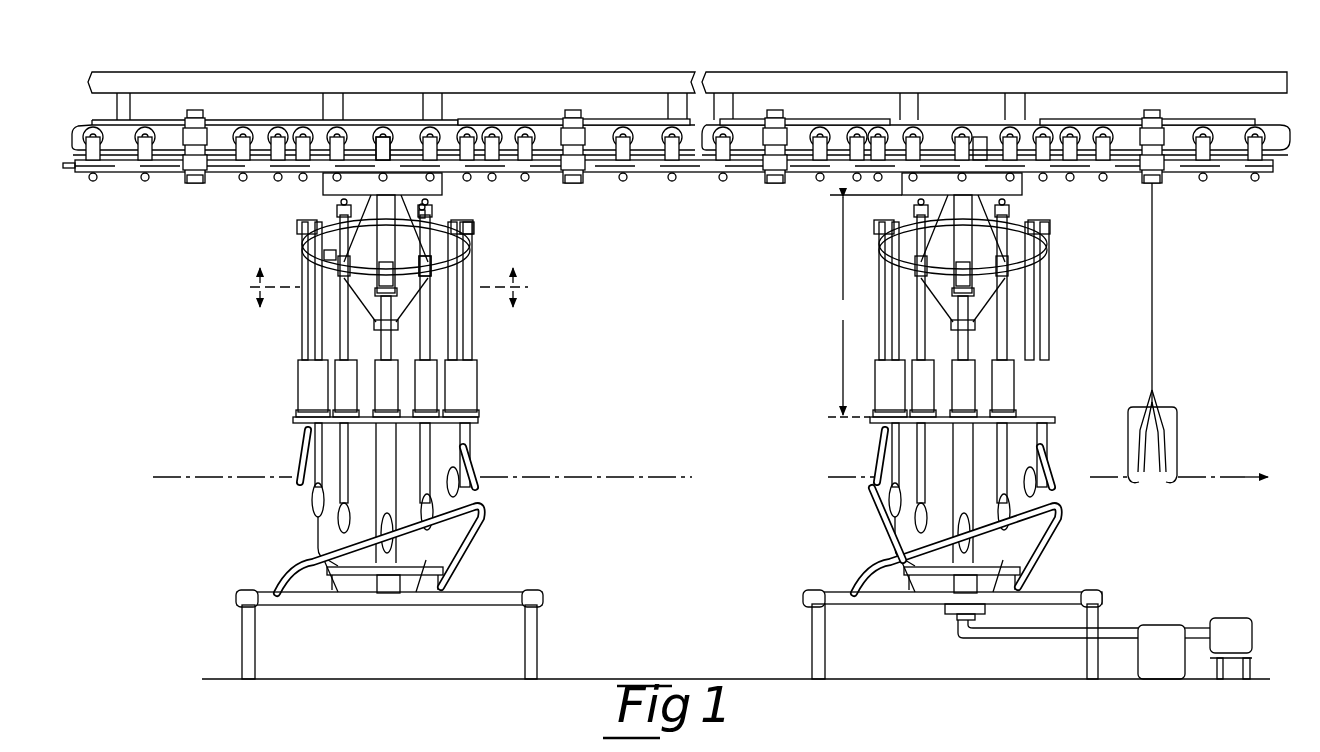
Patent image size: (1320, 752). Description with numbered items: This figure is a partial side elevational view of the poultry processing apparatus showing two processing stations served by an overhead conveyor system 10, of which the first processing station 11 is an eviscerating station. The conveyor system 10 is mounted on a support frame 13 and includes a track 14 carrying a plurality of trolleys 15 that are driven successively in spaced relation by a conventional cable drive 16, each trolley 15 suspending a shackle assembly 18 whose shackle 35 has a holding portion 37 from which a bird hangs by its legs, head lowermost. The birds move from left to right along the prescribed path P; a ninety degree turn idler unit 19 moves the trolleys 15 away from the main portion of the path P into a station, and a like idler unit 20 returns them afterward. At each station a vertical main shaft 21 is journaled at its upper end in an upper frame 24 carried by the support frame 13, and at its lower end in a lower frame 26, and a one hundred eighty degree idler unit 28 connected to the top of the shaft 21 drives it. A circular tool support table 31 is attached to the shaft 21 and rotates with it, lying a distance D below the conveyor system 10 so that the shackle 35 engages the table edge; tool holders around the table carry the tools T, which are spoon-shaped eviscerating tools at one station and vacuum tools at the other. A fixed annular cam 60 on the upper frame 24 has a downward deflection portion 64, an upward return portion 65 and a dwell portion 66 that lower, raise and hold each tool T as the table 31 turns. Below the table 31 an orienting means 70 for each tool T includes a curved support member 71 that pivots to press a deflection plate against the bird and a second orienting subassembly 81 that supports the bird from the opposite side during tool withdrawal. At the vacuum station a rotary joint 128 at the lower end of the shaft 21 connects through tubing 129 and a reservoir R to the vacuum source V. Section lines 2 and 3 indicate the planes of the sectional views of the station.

The conveyor system 10 is at (612, 116).
The support frame 13 is at (778, 78).
The track 14 is at (540, 128).
The trolley 15 is at (630, 158).
The cable drive 16 is at (70, 173).
The 90° turn idler unit 19 is at (172, 173).
The idler unit 20 is at (583, 168).
The 180° idler unit 28 is at (400, 155).
The main shaft 21 is at (676, 233).
The upper frame 24 is at (940, 190).
The dwell portion 66 is at (451, 202).
The fixed annular cam 60 is at (486, 227).
The downward deflection portion 64 is at (303, 255).
The upward return portion 65 is at (436, 274).
The first processing station 11 is at (475, 371).
The circular tool support table 31 is at (655, 423).
The tool T is at (772, 465).
The curved support member 71 is at (593, 494).
The orienting means 70 is at (874, 524).
The second orienting subassembly 81 is at (684, 549).
The lower frame 26 is at (669, 634).
The rotary joint 128 is at (945, 617).
The tubing 129 is at (1084, 621).
The distance D is at (865, 306).
The section line 2- 2 is at (384, 265).
The section line 3- 3 is at (381, 310).
The shackle assembly 18 is at (1153, 291).
The shackle 35 is at (1178, 418).
The holding portion 37 is at (1170, 479).
The path P is at (1252, 476).
The reservoir R is at (1166, 632).
The vacuum source V is at (1240, 624).